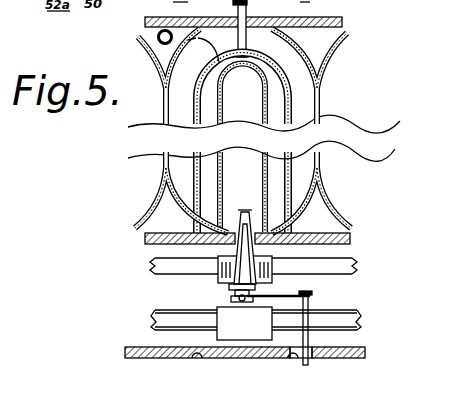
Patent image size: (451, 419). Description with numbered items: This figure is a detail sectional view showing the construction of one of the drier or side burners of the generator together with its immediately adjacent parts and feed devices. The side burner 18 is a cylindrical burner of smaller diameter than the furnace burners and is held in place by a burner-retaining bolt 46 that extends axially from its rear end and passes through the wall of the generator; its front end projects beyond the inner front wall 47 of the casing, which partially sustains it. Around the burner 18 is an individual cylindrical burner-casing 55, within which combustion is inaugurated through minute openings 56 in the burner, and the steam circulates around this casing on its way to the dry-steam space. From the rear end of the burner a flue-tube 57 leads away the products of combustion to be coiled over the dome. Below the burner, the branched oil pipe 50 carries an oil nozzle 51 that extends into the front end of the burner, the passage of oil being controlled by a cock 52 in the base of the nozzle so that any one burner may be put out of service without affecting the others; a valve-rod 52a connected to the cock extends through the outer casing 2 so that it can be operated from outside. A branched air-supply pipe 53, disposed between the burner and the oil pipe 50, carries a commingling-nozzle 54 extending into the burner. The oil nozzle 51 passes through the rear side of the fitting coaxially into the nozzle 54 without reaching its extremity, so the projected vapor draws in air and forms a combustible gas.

The outer casing 2 is at (127, 352).
The burner 18 is at (292, 150).
The burner-retaining bolt 46 is at (232, 11).
The inner front wall 47 is at (352, 239).
The branched oil pipe 50 is at (155, 318).
The oil nozzle 51 is at (232, 248).
The cock 52 is at (228, 296).
The valve-rod 52a is at (309, 314).
The branched air-supply pipe 53 is at (153, 272).
The commingling-nozzle 54 is at (244, 238).
The burner-casing 55 is at (193, 158).
The minute openings 56 is at (262, 119).
The flue-tube 57 is at (202, 45).